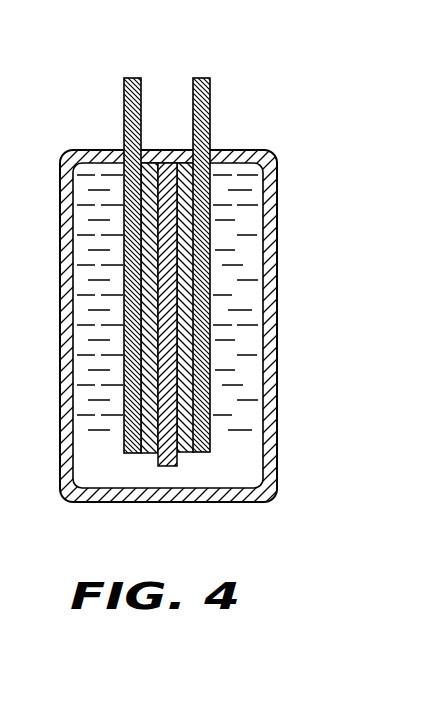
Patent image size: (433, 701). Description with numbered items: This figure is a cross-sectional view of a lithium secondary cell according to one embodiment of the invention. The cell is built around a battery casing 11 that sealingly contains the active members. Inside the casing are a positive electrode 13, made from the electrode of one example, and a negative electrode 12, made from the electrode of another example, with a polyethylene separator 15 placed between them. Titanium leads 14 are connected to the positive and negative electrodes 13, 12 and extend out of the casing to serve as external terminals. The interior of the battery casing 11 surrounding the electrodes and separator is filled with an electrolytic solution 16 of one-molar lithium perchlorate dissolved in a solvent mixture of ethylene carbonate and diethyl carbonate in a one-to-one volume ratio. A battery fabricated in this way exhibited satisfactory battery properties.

The battery casing 11 is at (277, 236).
The negative electrode 12 is at (197, 455).
The positive electrode 13 is at (139, 455).
The titanium leads 14 is at (198, 77).
The polyethylene separator 15 is at (173, 468).
The electrolytic solution 16 is at (260, 335).